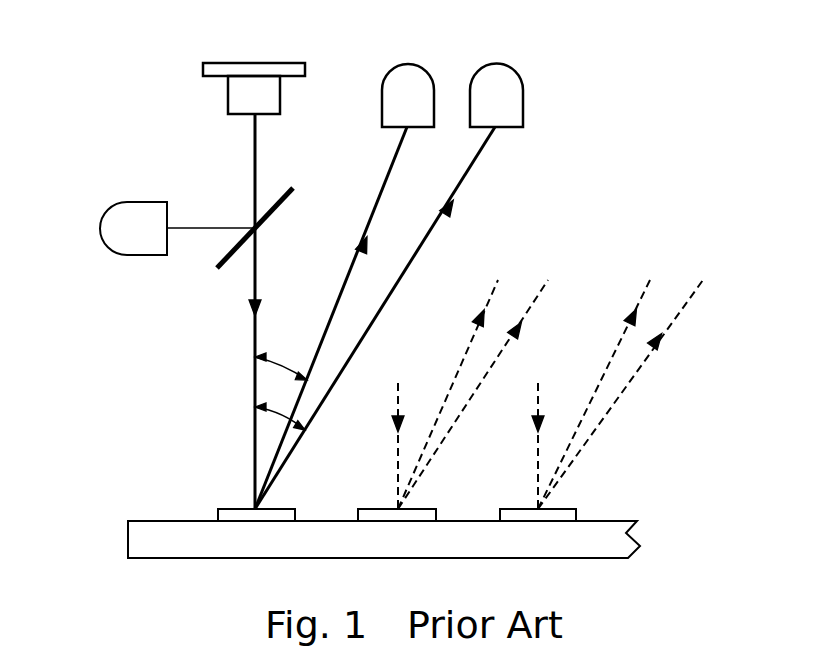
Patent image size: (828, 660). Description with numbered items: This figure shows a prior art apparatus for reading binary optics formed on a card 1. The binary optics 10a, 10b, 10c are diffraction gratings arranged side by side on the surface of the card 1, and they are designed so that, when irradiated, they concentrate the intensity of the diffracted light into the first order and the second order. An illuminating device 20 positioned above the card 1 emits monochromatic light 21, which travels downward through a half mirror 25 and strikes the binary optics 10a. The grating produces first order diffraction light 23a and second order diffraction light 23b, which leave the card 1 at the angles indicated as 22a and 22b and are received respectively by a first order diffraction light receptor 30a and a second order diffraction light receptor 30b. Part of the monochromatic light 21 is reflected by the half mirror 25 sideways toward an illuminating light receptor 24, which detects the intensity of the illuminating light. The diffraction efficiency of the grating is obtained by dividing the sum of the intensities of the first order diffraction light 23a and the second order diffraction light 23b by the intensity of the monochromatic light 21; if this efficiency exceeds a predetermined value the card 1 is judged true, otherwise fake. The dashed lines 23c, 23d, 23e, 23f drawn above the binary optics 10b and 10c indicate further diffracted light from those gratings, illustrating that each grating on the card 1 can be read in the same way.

The card 1 is at (126, 535).
The binary optics 10a is at (222, 509).
The binary optics 10b is at (392, 509).
The binary optics 10c is at (563, 509).
The illuminating device 20 is at (254, 63).
The monochromatic light 21 is at (251, 282).
The reflection angle 22a is at (288, 362).
The reflection angle 22b is at (255, 385).
The first order diffraction light 23a is at (343, 283).
The second order diffraction light 23b is at (448, 217).
The scattered light beam 23c is at (451, 381).
The scattered light beam 23d is at (491, 381).
The scattered light beam 23e is at (599, 381).
The scattered light beam 23f is at (635, 381).
The illuminating light receptor 24 is at (103, 218).
The half mirror 25 is at (293, 188).
The first order diffraction light receptor 30a is at (408, 64).
The second order diffraction light receptor 30b is at (496, 64).